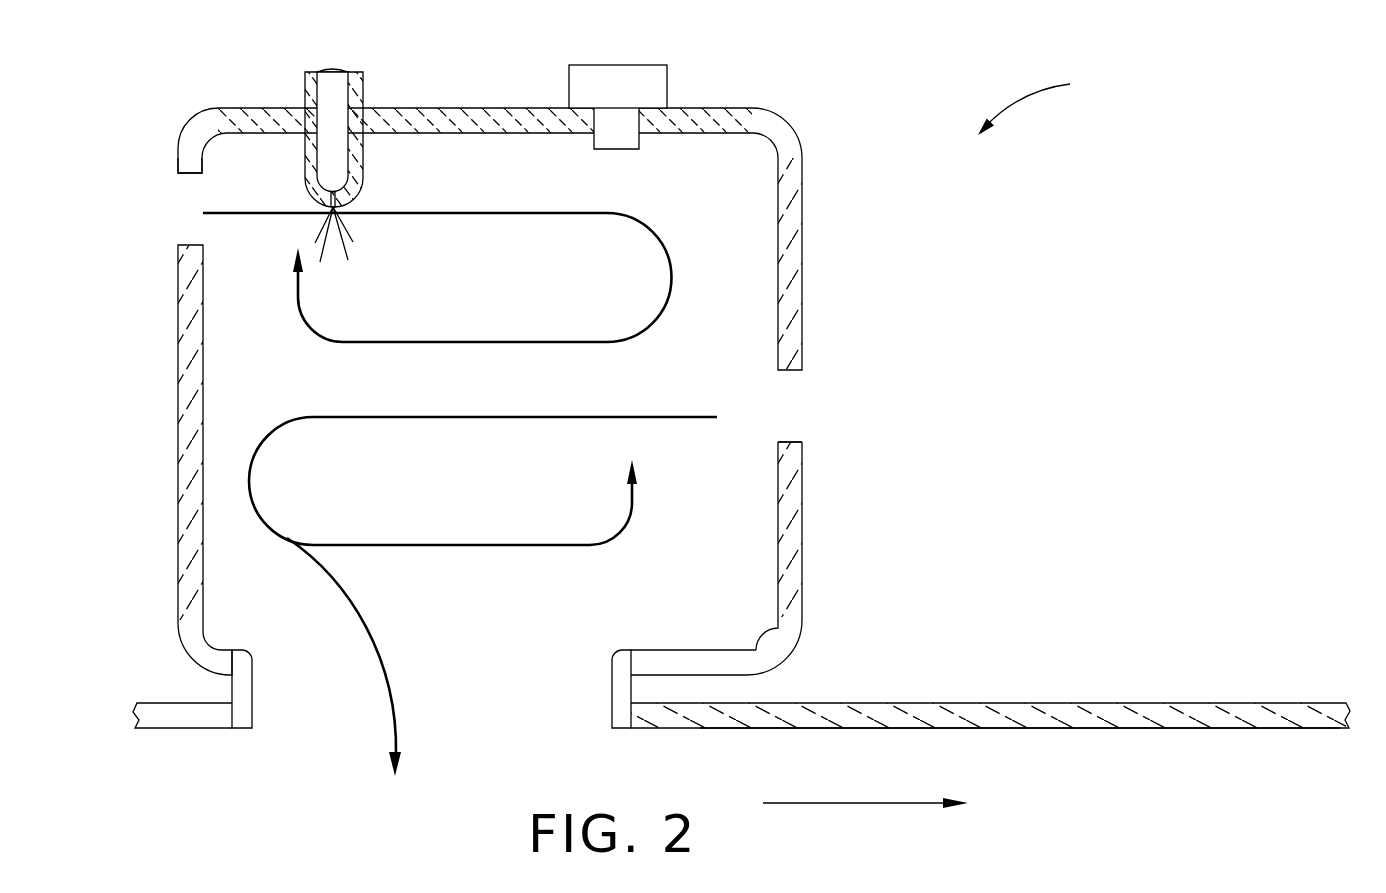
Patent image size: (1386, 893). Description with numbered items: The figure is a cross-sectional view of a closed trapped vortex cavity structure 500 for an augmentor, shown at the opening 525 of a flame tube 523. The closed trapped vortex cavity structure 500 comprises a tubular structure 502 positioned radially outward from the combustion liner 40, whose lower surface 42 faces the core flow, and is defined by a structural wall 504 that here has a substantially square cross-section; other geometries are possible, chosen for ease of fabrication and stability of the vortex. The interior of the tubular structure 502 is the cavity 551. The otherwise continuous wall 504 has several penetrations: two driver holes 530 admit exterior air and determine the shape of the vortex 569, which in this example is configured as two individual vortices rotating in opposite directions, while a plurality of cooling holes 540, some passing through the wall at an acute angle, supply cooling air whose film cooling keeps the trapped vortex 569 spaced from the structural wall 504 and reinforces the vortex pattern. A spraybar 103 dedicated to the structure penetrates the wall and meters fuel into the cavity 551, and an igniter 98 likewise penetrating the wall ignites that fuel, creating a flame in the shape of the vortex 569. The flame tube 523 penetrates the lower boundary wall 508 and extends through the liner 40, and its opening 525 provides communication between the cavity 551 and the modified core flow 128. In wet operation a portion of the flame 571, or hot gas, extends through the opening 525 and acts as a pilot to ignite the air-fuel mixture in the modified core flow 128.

The combustion liner 40 is at (990, 703).
The liner surface 42 is at (965, 728).
The igniter 98 is at (667, 85).
The spraybar 103 is at (305, 87).
The modified core flow 128 is at (855, 802).
The closed trapped vortex cavity structure 500 is at (1054, 103).
The tubular structure 502 is at (790, 122).
The structural wall 504 is at (802, 478).
The lower boundary wall 508 is at (713, 675).
The flame tube 523 is at (252, 703).
The opening 525 is at (612, 698).
The driver hole 530 is at (190, 174).
The cooling holes 540 is at (803, 293).
The cavity 551 is at (725, 217).
The vortex 569 is at (617, 342).
The flame 571 is at (390, 684).